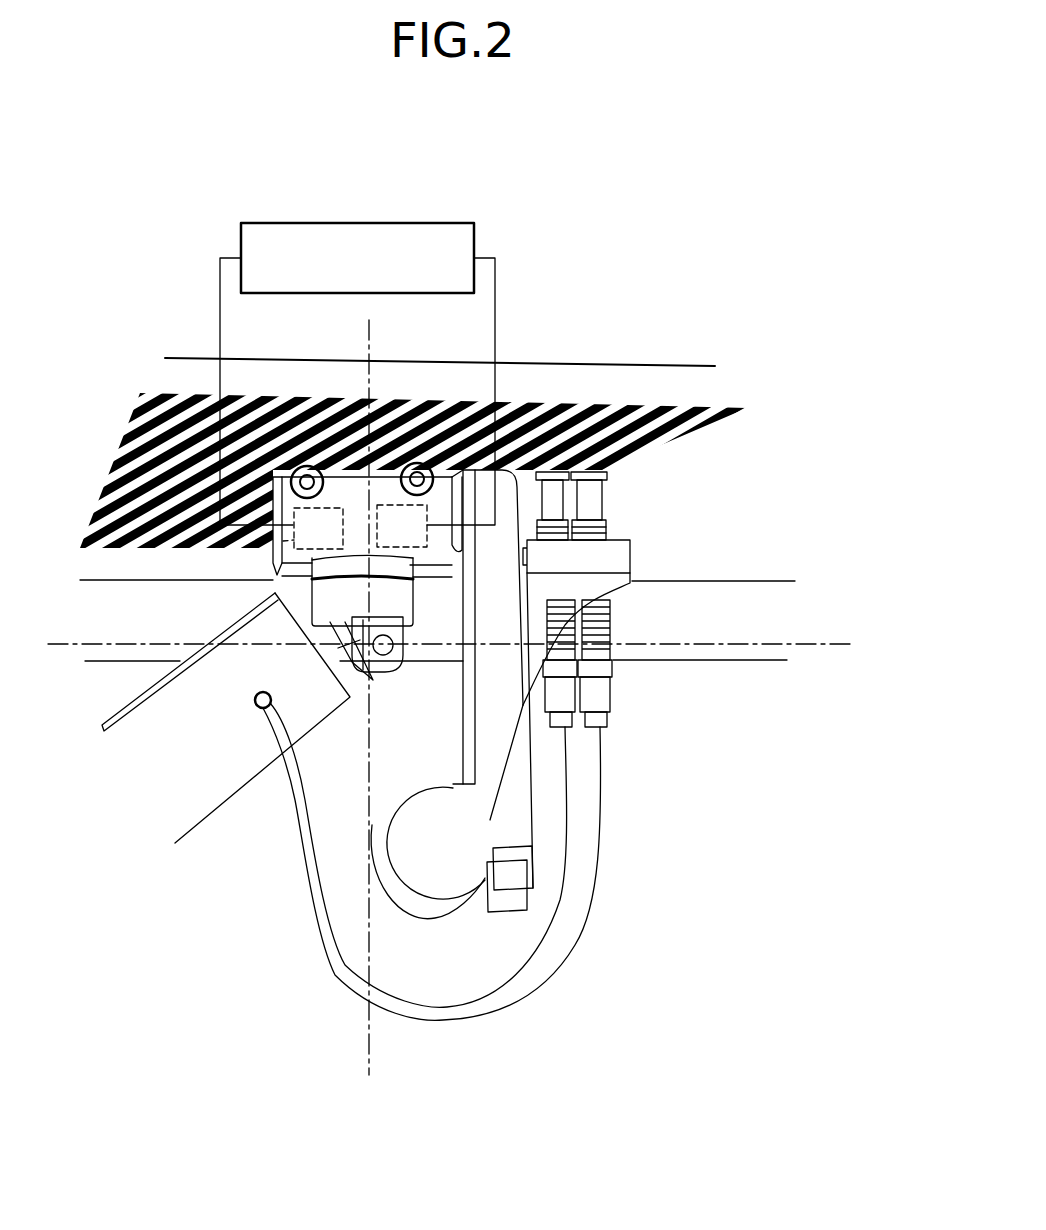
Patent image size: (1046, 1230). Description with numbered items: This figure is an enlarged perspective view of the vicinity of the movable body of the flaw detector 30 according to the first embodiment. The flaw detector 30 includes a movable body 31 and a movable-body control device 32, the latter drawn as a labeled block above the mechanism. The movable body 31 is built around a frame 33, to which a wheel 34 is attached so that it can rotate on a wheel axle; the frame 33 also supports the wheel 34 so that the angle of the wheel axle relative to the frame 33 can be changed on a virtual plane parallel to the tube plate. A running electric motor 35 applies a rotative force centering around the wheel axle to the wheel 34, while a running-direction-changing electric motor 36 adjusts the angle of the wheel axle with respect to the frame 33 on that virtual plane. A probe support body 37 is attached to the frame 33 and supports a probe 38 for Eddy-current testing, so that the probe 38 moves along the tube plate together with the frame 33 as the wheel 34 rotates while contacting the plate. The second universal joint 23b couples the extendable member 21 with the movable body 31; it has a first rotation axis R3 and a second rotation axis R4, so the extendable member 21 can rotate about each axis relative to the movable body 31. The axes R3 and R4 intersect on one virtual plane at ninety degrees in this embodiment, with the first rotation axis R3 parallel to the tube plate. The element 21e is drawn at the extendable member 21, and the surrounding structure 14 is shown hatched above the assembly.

The movable body (vehicle body) 14 is at (667, 450).
The flaw detector 30 is at (741, 192).
The movable body 31 is at (736, 793).
The movable-body control device 32 is at (437, 221).
The frame 33 is at (270, 582).
The wheel 34 is at (418, 465).
The running electric motor 35 is at (275, 554).
The running-direction-changing electric motor 36 is at (468, 540).
The probe support body 37 is at (522, 912).
The probe 38 is at (572, 727).
The second universal joint 23b is at (421, 598).
The extendable member 21 is at (214, 820).
The cable attachment 21e is at (333, 723).
The first rotation axis R3 is at (800, 648).
The second rotation axis R4 is at (372, 1047).